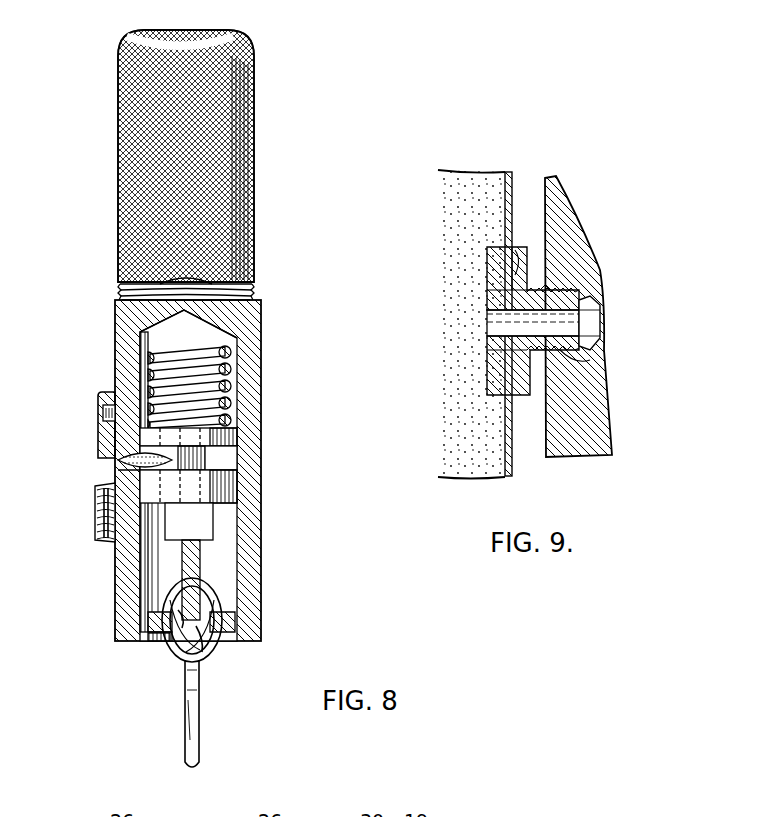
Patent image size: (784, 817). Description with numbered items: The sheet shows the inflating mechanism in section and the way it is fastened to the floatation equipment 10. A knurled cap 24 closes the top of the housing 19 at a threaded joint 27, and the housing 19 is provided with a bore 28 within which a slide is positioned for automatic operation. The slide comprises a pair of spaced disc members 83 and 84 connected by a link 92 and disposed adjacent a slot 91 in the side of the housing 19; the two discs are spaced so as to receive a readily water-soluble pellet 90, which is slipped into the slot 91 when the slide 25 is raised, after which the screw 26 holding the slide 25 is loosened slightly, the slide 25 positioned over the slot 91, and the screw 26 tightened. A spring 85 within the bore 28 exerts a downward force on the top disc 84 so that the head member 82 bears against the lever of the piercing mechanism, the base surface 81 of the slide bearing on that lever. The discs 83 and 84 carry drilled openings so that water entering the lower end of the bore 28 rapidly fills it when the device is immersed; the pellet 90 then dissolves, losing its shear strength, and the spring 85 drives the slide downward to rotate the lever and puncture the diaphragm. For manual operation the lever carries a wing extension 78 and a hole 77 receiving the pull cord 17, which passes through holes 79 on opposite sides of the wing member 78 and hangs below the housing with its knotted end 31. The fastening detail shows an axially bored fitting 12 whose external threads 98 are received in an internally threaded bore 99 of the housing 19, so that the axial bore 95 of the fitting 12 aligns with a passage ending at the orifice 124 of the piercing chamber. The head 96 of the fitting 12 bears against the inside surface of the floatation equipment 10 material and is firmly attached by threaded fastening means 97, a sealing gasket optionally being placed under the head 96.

In FIG. 9, the floatation equipment 10 is at (510, 172).
In FIG. 8, the axially bored fitting 12 is at (100, 542).
In FIG. 9, the axially bored fitting 12 is at (548, 288).
In FIG. 8, the pull cord 17 is at (200, 735).
In FIG. 8, the housing 19 is at (130, 282).
In FIG. 9, the housing 19 is at (562, 190).
In FIG. 8, the knurled cap 24 is at (243, 78).
In FIG. 8, the slide 25 is at (100, 392).
In FIG. 8, the screw 26 is at (102, 416).
In FIG. 8, the threaded joint 27 is at (178, 285).
In FIG. 8, the bore 28 is at (240, 360).
In FIG. 8, the cord end 31 is at (205, 652).
In FIG. 8, the hole 77 is at (200, 586).
In FIG. 8, the wing extension 78 is at (225, 622).
In FIG. 8, the holes 79 is at (180, 640).
In FIG. 8, the base surface 81 is at (202, 548).
In FIG. 8, the head member 82 is at (200, 533).
In FIG. 8, the disc member 83 is at (232, 488).
In FIG. 8, the disc member 84 is at (232, 437).
In FIG. 8, the spring 85 is at (225, 380).
In FIG. 8, the soluble pellet 90 is at (130, 462).
In FIG. 8, the slot 91 is at (130, 472).
In FIG. 8, the link 92 is at (195, 462).
In FIG. 9, the axial bore 95 is at (495, 332).
In FIG. 9, the head 96 is at (487, 255).
In FIG. 9, the threaded fastening means 97 is at (512, 248).
In FIG. 9, the external threads 98 is at (500, 352).
In FIG. 9, the internally threaded bore 99 is at (575, 358).
In FIG. 9, the orifice 124 is at (598, 326).